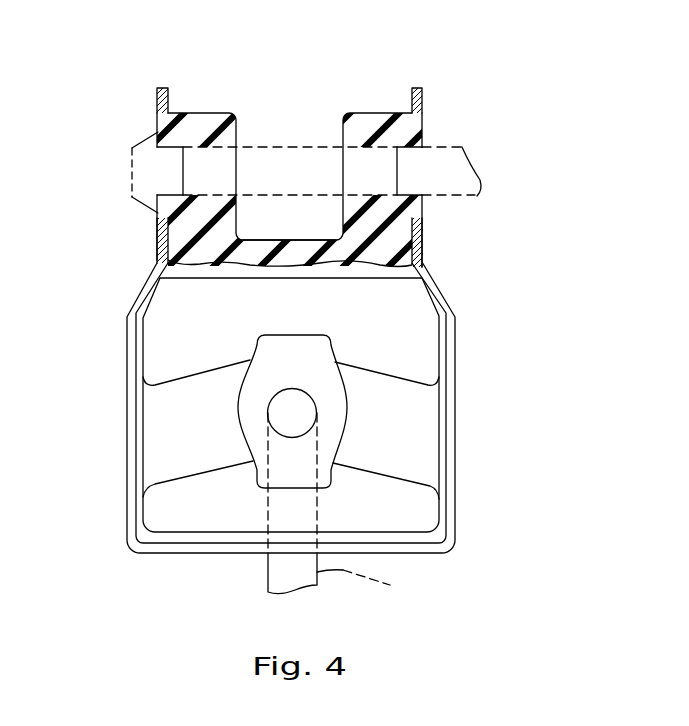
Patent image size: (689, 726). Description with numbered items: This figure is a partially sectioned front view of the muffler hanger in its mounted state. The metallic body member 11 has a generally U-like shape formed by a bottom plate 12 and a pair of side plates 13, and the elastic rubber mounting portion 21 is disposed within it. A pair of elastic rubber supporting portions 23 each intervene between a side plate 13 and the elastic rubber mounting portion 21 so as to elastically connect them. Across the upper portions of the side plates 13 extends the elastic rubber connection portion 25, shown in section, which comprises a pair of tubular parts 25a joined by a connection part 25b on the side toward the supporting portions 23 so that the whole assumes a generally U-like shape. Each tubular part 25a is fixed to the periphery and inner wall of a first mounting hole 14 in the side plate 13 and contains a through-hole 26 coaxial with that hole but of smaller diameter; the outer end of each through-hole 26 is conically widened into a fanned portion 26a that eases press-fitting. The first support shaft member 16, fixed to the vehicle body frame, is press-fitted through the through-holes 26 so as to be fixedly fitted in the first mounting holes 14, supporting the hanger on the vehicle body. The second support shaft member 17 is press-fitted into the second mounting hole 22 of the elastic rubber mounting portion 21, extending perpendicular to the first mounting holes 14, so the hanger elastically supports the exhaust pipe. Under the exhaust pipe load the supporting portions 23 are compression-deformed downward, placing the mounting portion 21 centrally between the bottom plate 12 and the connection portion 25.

The metallic body member 11 is at (417, 86).
The bottom plate 12 is at (203, 553).
The side plates 13 is at (458, 340).
The first mounting holes 14 is at (158, 212).
The first support shaft member 16 is at (462, 145).
The second support shaft member 17 is at (345, 512).
The elastic rubber mounting portion 21 is at (335, 488).
The second mounting hole 22 is at (276, 427).
The elastic rubber supporting portions 23 is at (185, 382).
The elastic rubber connection portion 25 is at (221, 102).
The tubular parts 25a is at (177, 112).
The connection part 25b is at (260, 239).
The through-hole 26 is at (354, 144).
The fanned portion 26a is at (160, 148).